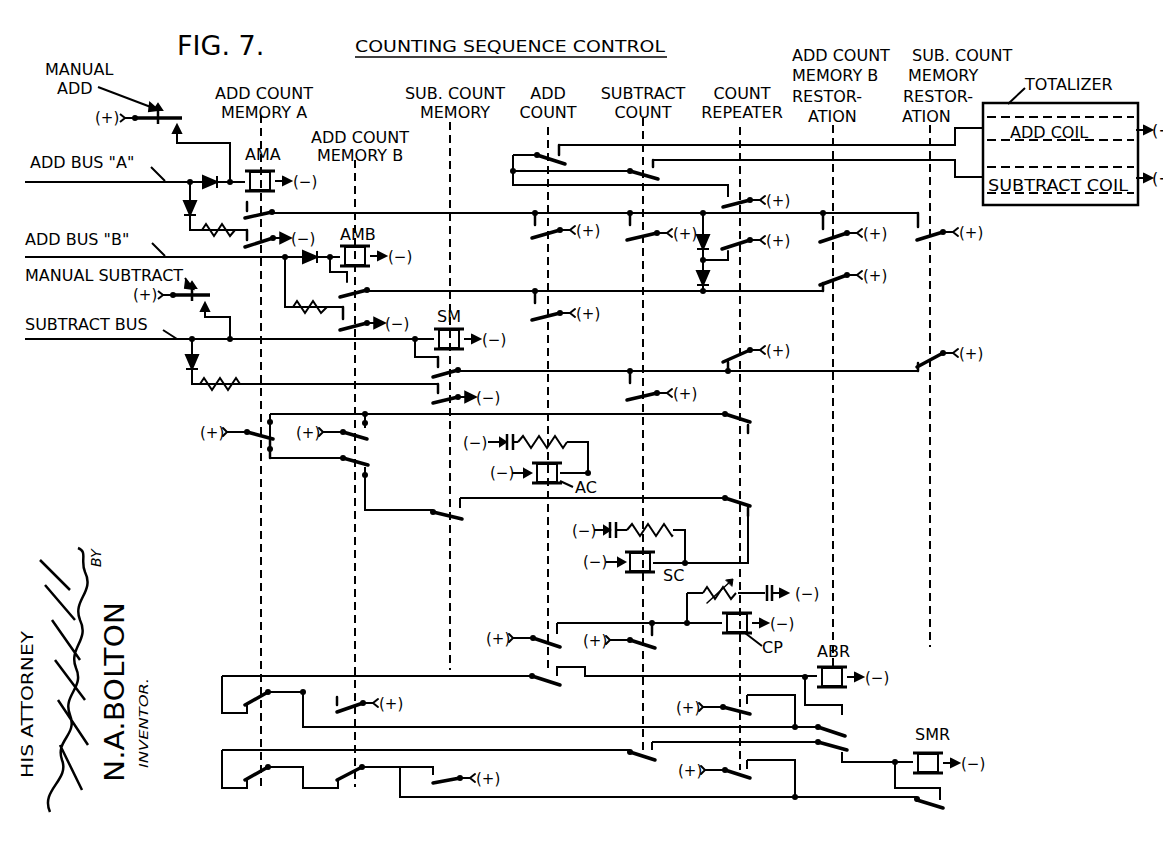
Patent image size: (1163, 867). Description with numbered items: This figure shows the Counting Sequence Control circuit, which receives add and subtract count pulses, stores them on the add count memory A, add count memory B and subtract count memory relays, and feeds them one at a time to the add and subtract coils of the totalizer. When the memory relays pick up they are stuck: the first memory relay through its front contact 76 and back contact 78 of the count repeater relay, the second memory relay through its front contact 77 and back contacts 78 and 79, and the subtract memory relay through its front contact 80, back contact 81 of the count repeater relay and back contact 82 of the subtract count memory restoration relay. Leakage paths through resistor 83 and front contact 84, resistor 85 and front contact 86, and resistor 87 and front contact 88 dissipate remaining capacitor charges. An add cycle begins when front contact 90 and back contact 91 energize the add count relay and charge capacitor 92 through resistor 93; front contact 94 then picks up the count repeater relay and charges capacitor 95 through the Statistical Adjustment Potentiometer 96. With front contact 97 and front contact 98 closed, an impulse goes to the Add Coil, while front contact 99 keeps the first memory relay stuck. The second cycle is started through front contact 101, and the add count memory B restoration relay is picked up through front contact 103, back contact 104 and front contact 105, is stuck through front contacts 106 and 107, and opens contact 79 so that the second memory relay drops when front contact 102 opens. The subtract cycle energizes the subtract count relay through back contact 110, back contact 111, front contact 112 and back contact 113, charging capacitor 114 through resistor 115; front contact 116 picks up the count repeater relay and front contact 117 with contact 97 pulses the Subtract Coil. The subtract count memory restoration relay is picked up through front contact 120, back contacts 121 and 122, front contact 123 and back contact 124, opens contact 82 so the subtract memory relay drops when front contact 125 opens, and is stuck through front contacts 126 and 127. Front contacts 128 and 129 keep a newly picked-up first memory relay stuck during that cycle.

The front contact of relay AMA 76 is at (246, 206).
The front contact of relay AMB 77 is at (346, 284).
The back contact of relay CP 78 is at (733, 260).
The back contact of relay ABR 79 is at (820, 287).
The front contact of relay SM 80 is at (432, 364).
The back contact of relay CP 81 is at (723, 361).
The back contact of relay SMR 82 is at (915, 366).
The resistor 83 is at (222, 233).
The front contact of relay AMA 84 is at (262, 236).
The resistor 85 is at (312, 310).
The front contact of relay AMB 86 is at (352, 312).
The resistor 87 is at (225, 390).
The front contact of relay SM 88 is at (432, 390).
The front contact of relay AMA 90 is at (271, 424).
The back contact of relay CP 91 is at (750, 433).
The capacitor 92 is at (507, 438).
The resistor 93 is at (563, 441).
The front contact of relay AC 94 is at (535, 635).
The capacitor 95 is at (771, 589).
The Statistical Adjustment Potentiometer 96 is at (717, 584).
The front contact of relay CP 97 is at (724, 197).
The front contact of relay AC 98 is at (562, 153).
The front contact of relay AC 99 is at (531, 227).
The front contact of relay AMB 101 is at (368, 428).
The front contact of relay AC 102 is at (532, 303).
The front contact of relay AMB 103 is at (354, 704).
The back contact of relay AMA 104 is at (250, 712).
The front contact of relay AC 105 is at (565, 683).
The front contact of relay CP 106 is at (733, 707).
The front contact of relay ABR 107 is at (845, 718).
The back contact of relay AMA 110 is at (271, 449).
The back contact of relay AMB 111 is at (368, 473).
The front contact 112 is at (466, 512).
The back contact of relay CP 113 is at (750, 516).
The capacitor 114 is at (607, 526).
The resistor 115 is at (663, 527).
The front contact of relay SC 116 is at (655, 640).
The front contact of relay SC 117 is at (658, 169).
The front contact of relay SM 120 is at (451, 780).
The back contact 121 is at (340, 786).
The back contact 122 is at (250, 786).
The front contact 123 is at (654, 746).
The back contact 124 is at (842, 757).
The front contact of relay SC 125 is at (628, 386).
The front contact of relay CP 126 is at (734, 770).
The front contact of relay SMR 127 is at (943, 798).
The front contact of relay SC 128 is at (631, 228).
The front contact of relay SMR 129 is at (927, 227).